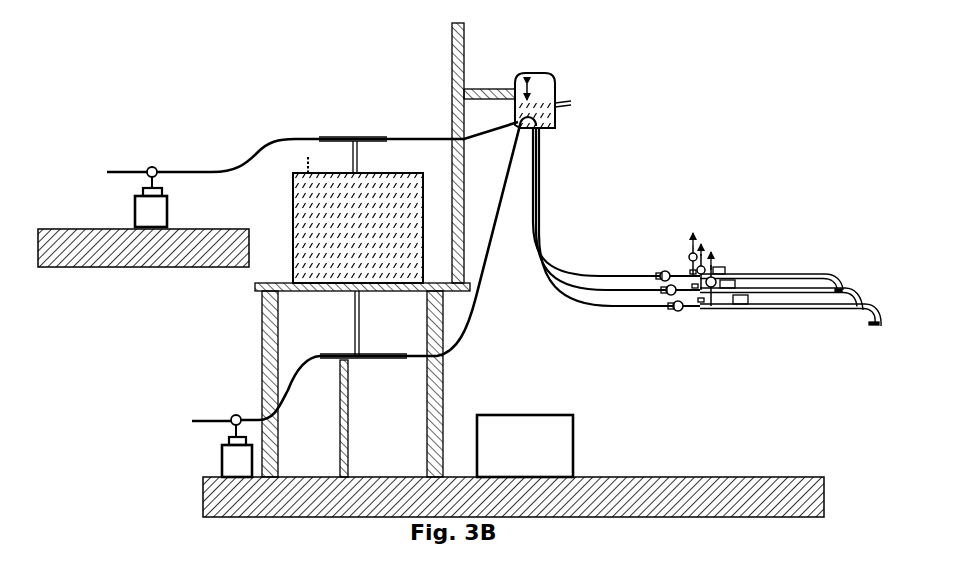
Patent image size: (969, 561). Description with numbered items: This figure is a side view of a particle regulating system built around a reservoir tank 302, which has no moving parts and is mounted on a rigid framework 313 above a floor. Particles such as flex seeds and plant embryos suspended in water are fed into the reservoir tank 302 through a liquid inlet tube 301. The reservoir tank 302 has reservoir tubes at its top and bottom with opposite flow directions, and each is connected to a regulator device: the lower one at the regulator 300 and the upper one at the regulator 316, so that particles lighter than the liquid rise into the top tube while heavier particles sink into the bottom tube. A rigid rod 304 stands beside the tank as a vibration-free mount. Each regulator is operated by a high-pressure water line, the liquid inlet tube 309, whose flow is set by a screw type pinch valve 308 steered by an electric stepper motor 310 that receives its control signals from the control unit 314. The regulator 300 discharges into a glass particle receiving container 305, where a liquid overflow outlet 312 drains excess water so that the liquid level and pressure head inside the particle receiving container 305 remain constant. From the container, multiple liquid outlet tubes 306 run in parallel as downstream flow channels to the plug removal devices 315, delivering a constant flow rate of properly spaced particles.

The regulator device 300 is at (380, 272).
The liquid inlet tube 301 is at (306, 152).
The reservoir tank 302 is at (290, 240).
The rigid rod 304 is at (467, 78).
The particle receiving container 305 is at (549, 70).
The liquid outlet tubes 306 is at (586, 304).
The screw type pinch valve 308 is at (148, 163).
The liquid inlet tube 309 is at (122, 168).
The electric stepper motor 310 is at (135, 207).
The liquid overflow outlet 312 is at (565, 101).
The rigid framework 313 is at (444, 428).
The control unit 314 is at (525, 446).
The plug removal devices 315 is at (716, 240).
The top regulator device 316 is at (355, 155).